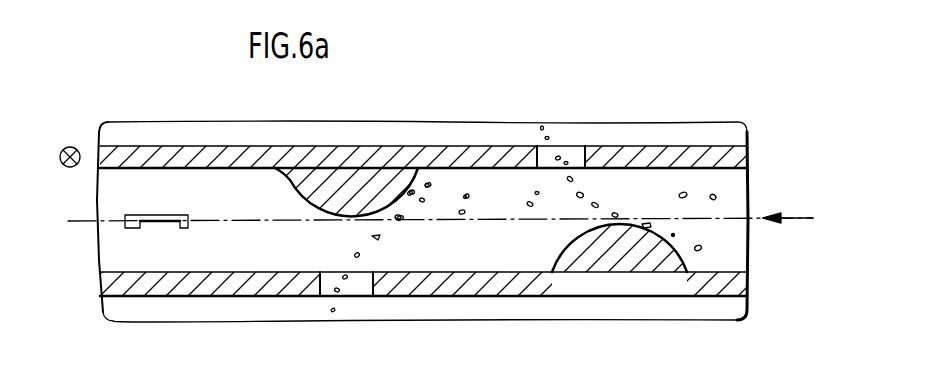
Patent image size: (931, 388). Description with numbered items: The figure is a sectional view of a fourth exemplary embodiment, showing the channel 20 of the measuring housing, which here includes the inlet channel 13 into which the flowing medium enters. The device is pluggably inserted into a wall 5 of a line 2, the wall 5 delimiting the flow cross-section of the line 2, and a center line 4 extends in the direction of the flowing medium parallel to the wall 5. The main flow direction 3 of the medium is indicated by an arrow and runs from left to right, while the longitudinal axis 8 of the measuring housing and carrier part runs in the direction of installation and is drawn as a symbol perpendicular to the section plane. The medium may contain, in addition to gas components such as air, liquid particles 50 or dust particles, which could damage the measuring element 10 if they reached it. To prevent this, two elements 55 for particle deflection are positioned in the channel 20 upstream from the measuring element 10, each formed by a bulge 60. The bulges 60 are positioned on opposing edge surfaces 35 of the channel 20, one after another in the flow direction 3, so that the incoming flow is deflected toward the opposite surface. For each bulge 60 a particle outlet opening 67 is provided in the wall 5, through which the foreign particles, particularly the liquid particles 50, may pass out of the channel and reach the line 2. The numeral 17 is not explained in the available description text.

The line 2 is at (632, 128).
The main flow direction 3 is at (800, 218).
The center line 4 is at (257, 217).
The wall 5 is at (497, 285).
The longitudinal axis 8 is at (70, 144).
The measuring element 10 is at (183, 222).
The inlet channel 13 is at (423, 314).
The channel 20 is at (423, 314).
The measuring section 17 is at (160, 255).
The edge surfaces 35 is at (150, 176).
The liquid particles 50 is at (718, 198).
The element for particle deflection 55 is at (481, 221).
The bulge 60 is at (350, 183).
The particle outlet opening 67 is at (573, 150).